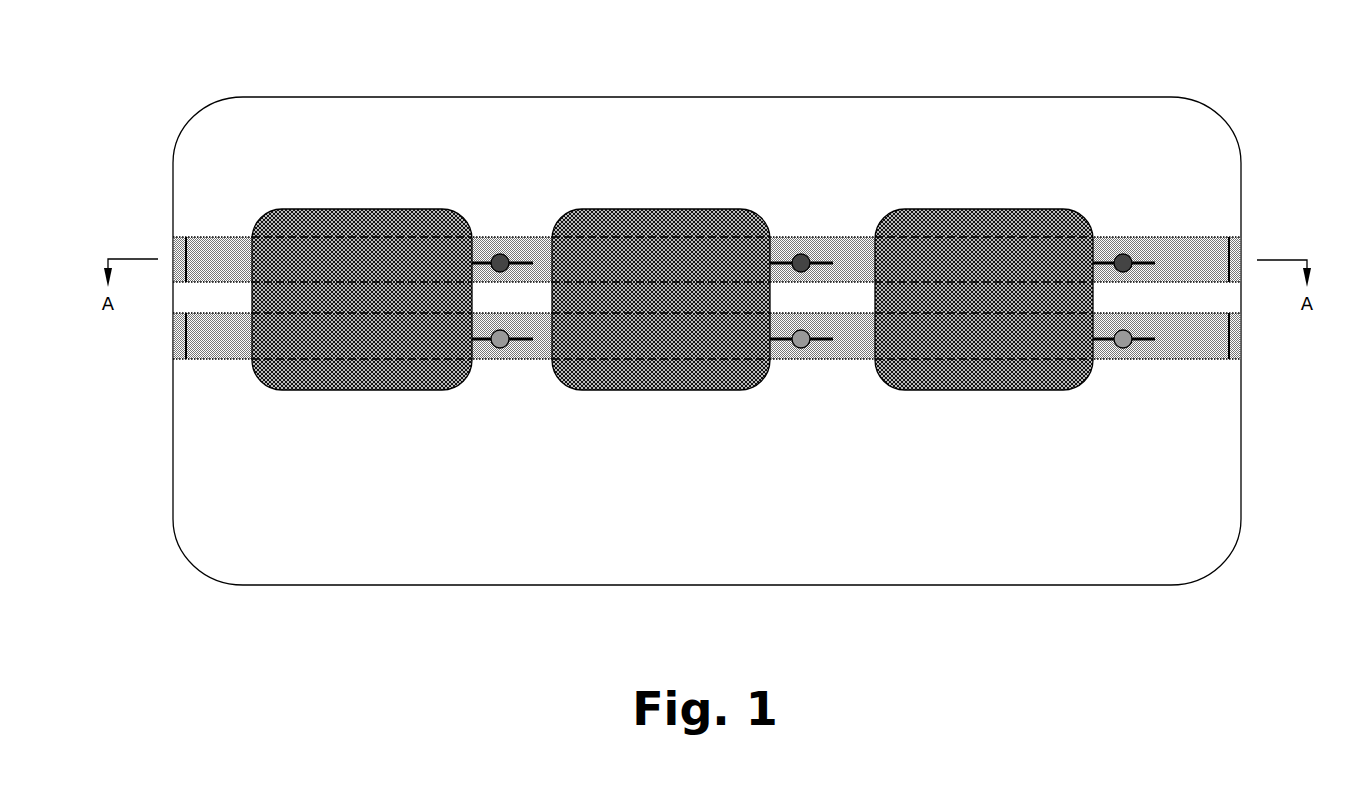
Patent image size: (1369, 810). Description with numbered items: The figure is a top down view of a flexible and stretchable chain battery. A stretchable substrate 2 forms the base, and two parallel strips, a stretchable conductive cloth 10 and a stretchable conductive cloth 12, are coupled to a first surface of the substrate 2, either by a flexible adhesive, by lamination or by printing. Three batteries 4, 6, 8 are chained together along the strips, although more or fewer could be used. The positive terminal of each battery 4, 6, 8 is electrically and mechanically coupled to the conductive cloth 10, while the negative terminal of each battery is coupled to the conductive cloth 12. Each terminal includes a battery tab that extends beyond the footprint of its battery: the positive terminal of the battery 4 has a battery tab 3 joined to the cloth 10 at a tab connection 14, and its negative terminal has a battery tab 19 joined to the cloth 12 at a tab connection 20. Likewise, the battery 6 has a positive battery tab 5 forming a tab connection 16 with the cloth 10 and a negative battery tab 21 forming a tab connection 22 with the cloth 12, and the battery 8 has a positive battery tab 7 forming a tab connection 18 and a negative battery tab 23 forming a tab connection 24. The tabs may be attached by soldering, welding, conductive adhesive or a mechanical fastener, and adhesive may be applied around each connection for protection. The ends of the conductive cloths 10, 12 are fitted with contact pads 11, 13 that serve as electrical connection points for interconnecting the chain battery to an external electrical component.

The stretchable substrate 2 is at (596, 555).
The battery tab 3 is at (484, 260).
The battery 4 is at (363, 391).
The battery tab 5 is at (784, 260).
The battery 6 is at (663, 391).
The battery tab 7 is at (1106, 260).
The battery 8 is at (987, 391).
The stretchable conductive cloth 10 is at (1181, 250).
The contact pad 11 is at (180, 247).
The stretchable conductive cloth 12 is at (1182, 352).
The contact pad 13 is at (180, 335).
The tab connection 14 is at (500, 254).
The tab connection 16 is at (802, 254).
The tab connection 18 is at (1124, 254).
The battery tab 19 is at (484, 342).
The tab connection 20 is at (500, 350).
The battery tab 21 is at (784, 342).
The tab connection 22 is at (802, 350).
The battery tab 23 is at (1107, 342).
The tab connection 24 is at (1124, 350).